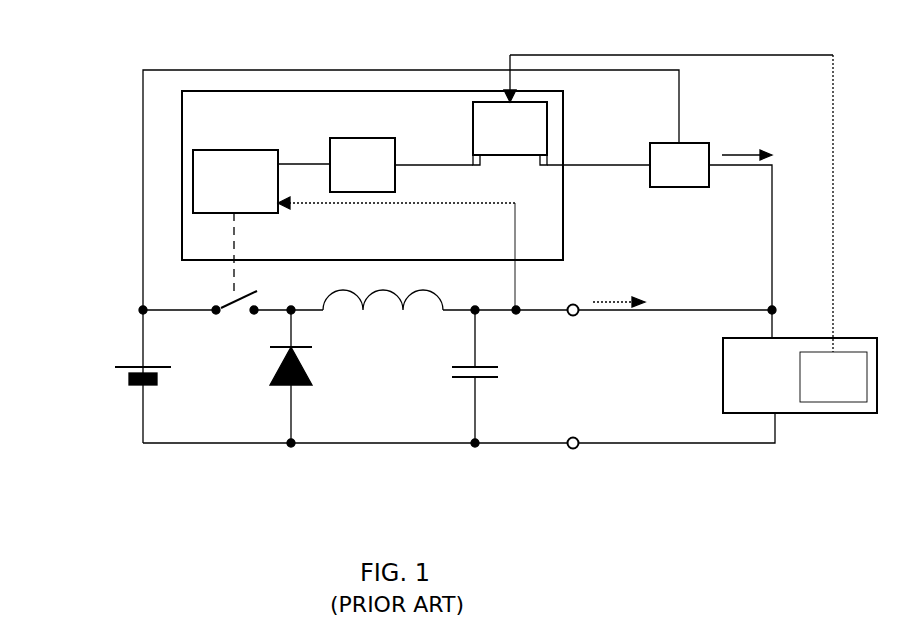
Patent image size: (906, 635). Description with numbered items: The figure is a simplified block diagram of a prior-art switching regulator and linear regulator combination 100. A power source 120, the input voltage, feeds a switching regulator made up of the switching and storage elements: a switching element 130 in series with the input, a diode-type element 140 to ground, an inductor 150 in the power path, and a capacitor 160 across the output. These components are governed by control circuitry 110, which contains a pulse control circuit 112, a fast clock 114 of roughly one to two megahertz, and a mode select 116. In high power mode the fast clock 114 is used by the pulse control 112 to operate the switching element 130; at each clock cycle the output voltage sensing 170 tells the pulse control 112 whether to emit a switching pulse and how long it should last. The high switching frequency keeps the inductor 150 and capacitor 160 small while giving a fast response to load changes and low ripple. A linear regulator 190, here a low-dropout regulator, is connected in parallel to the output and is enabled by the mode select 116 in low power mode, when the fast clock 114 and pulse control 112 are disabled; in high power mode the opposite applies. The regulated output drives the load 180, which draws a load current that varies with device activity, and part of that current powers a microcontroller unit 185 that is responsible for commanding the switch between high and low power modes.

The switching regulator and linear regulator combination 100 is at (58, 51).
The control circuitry 110 is at (183, 142).
The pulse control circuit 112 is at (257, 150).
The fast clock 114 is at (385, 138).
The mode select 116 is at (510, 158).
The power source 120 is at (97, 371).
The switching element 130 is at (224, 295).
The switching and storage element 140 is at (263, 372).
The inductor 150 is at (425, 310).
The capacitor 160 is at (510, 370).
The output voltage sensing 170 is at (518, 298).
The load 180 is at (775, 360).
The microcontroller unit 185 is at (832, 403).
The linear regulator 190 is at (700, 143).